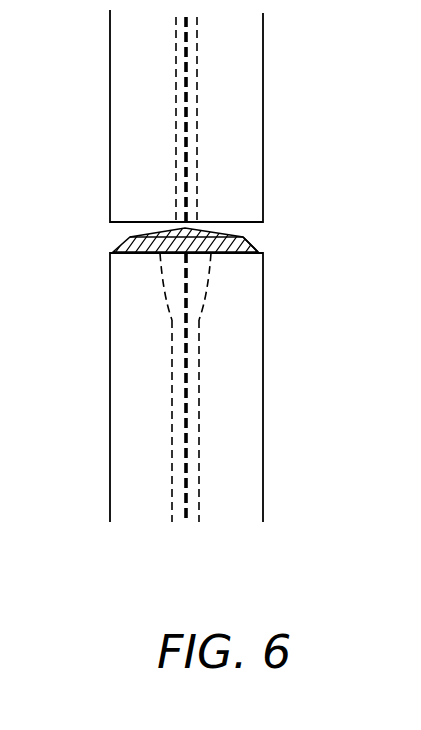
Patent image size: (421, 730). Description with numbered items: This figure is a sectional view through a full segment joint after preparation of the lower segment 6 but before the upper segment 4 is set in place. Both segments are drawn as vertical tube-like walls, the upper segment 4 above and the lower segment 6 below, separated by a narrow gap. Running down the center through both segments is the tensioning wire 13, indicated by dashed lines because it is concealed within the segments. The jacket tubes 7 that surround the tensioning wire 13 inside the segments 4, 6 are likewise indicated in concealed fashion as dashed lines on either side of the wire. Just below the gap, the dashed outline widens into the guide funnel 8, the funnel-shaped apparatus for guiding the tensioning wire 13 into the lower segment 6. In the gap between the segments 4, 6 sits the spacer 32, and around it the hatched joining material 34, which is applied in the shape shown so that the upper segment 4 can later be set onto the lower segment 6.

The upper segment 4 is at (237, 137).
The lower segment 6 is at (237, 426).
The jacket tube 7 is at (185, 90).
The guide funnel 8 is at (179, 282).
The tensioning wire 13 is at (190, 175).
The spacer 32 is at (122, 241).
The joining material 34 is at (249, 251).